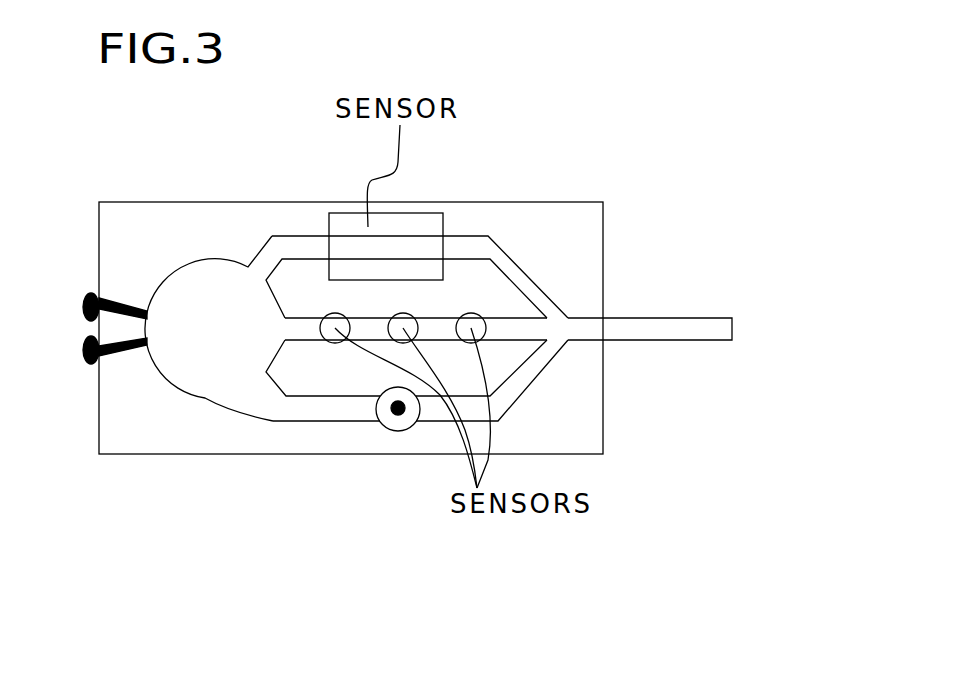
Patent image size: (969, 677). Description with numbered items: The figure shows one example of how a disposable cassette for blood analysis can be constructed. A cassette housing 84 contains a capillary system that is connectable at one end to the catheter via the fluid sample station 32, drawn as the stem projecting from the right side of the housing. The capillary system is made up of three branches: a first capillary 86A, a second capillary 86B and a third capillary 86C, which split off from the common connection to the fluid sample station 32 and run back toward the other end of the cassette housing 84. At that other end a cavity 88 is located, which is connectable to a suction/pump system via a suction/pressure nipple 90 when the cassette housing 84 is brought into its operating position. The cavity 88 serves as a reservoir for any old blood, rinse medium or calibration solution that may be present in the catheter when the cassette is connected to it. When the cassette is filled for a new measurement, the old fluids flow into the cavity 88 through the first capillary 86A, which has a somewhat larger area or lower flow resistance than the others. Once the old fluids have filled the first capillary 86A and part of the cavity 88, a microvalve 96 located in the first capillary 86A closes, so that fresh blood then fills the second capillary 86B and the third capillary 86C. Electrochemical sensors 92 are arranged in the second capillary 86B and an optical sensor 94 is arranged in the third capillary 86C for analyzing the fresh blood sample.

The cassette housing 84 is at (224, 202).
The cavity 88 is at (177, 290).
The suction/pressure nipple 90 is at (85, 350).
The optical sensor 94 is at (342, 218).
The electrochemical sensors 92 is at (335, 328).
The microvalve 96 is at (400, 432).
The first capillary 86A is at (542, 372).
The second capillary 86B is at (315, 340).
The third capillary 86C is at (532, 280).
The fluid sample station 32 is at (709, 331).